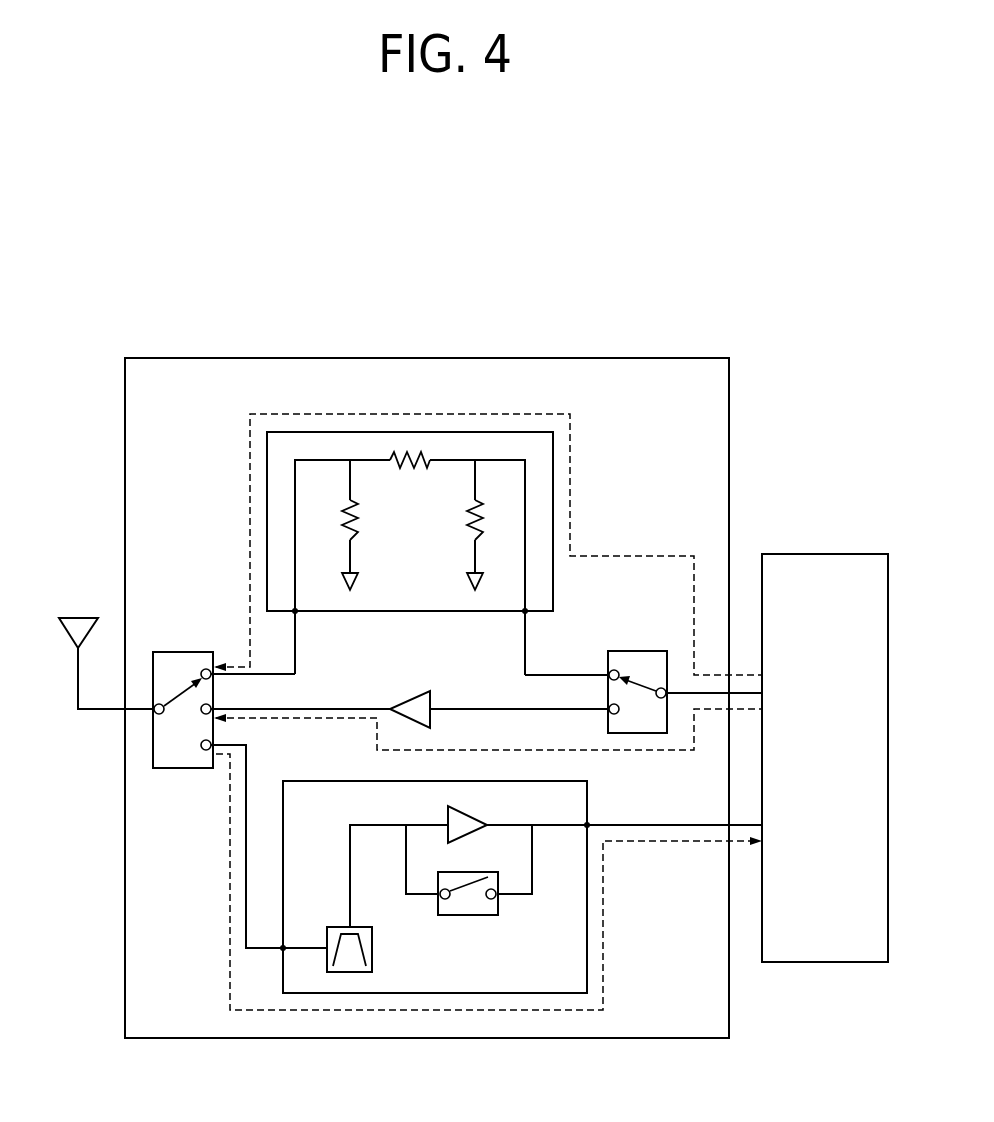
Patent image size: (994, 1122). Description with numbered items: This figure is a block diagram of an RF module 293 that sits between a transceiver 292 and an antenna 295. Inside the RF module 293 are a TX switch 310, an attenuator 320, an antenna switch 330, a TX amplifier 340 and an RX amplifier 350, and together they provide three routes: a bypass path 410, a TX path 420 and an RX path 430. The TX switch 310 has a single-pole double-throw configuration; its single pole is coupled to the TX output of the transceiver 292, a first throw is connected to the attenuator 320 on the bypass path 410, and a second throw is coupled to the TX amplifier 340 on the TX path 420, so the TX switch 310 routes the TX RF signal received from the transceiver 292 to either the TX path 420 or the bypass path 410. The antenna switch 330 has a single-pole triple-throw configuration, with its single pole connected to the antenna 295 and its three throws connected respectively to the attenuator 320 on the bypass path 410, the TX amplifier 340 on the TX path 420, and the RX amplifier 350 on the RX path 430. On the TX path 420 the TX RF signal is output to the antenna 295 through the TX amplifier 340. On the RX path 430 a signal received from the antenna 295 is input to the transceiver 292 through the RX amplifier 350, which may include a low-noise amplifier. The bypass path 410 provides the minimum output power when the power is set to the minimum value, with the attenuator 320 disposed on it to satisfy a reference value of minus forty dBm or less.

The transceiver 292 is at (824, 554).
The RF module 293 is at (618, 358).
The antenna 295 is at (76, 618).
The TX switch 310 is at (636, 651).
The attenuator 320 is at (501, 432).
The antenna switch 330 is at (182, 652).
The TX amplifier 340 is at (408, 700).
The RX amplifier 350 is at (587, 955).
The bypass path 410 is at (570, 470).
The TX path 420 is at (662, 751).
The RX path 430 is at (660, 842).